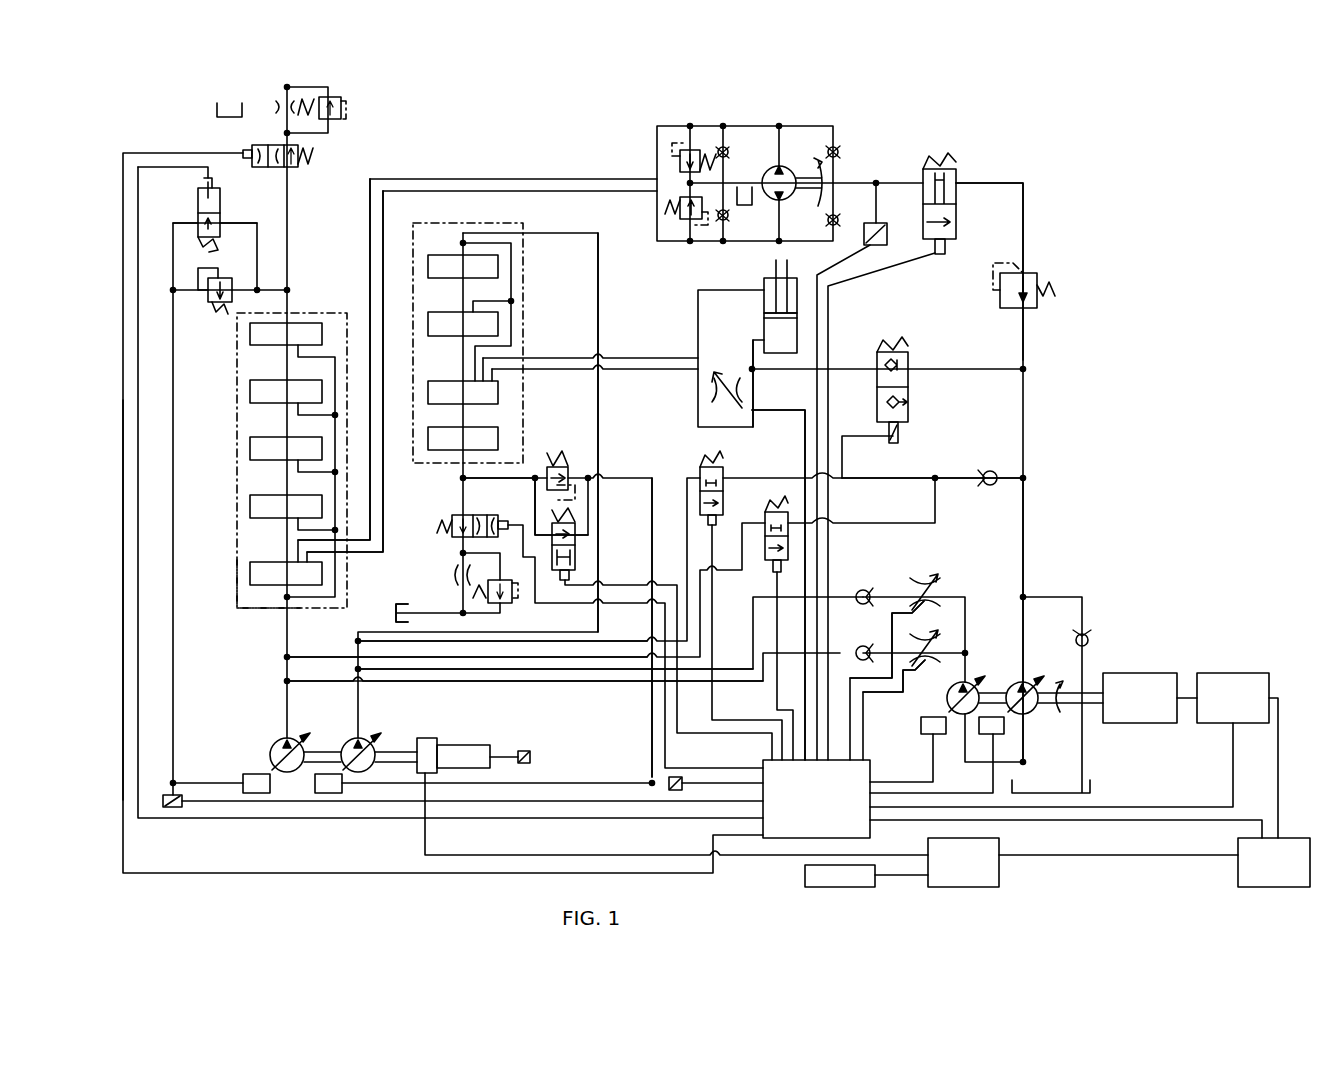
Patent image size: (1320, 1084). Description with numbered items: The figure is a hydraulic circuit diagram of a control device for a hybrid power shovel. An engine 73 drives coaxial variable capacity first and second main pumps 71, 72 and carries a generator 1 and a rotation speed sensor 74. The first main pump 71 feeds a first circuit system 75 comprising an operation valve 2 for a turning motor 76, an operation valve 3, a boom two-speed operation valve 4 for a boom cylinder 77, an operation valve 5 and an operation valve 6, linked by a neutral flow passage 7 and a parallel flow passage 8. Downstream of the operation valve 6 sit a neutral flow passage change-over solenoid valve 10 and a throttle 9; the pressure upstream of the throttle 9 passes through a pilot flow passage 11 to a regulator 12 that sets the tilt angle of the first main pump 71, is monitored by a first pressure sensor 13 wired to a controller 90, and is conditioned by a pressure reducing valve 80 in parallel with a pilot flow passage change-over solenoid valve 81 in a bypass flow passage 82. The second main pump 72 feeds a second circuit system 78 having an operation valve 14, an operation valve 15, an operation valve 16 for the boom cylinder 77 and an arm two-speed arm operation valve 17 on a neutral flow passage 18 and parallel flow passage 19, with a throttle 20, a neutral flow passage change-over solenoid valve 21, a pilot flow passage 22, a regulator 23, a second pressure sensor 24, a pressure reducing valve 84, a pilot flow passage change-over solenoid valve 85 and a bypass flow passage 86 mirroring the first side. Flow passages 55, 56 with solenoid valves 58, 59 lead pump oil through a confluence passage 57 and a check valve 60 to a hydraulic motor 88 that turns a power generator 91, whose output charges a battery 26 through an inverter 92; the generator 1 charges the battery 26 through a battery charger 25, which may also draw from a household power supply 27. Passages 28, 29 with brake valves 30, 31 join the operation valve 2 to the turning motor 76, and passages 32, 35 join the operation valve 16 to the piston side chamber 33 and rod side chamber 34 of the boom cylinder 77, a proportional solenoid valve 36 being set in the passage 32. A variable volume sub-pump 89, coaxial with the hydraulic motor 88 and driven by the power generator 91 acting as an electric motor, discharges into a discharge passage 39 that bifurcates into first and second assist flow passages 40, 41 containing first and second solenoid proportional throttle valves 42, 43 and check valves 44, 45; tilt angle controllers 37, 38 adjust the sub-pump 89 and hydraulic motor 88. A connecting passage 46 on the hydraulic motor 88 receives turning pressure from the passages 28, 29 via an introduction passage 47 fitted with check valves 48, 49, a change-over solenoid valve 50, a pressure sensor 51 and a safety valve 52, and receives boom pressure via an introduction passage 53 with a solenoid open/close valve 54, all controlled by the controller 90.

The generator 1 is at (427, 738).
The operation valve 2 is at (250, 574).
The operation valve 3 is at (250, 507).
The boom two-speed operation valve 4 is at (250, 449).
The operation valve 5 is at (250, 392).
The operation valve 6 is at (250, 334).
The neutral flow passage 7 is at (290, 420).
The parallel flow passage 8 is at (335, 360).
The throttle 9 is at (274, 112).
The neutral flow passage change-over solenoid valve 10 is at (300, 168).
The pilot flow passage 11 is at (123, 617).
The regulator 12 is at (252, 793).
The first pressure sensor 13 is at (173, 807).
The operation valve 14 is at (428, 262).
The operation valve 15 is at (428, 320).
The operation valve 16 is at (428, 388).
The arm two-speed arm operation valve 17 is at (498, 432).
The neutral flow passage 18 is at (465, 412).
The parallel flow passage 19 is at (510, 262).
The throttle 20 is at (448, 578).
The neutral flow passage change-over solenoid valve 21 is at (445, 512).
The pilot flow passage 22 is at (652, 632).
The regulator 23 is at (325, 793).
The second pressure sensor 24 is at (676, 790).
The battery charger 25 is at (999, 875).
The battery 26 is at (1238, 876).
The household power supply 27 is at (805, 878).
The passage 28 is at (748, 126).
The passage 29 is at (725, 241).
The brake valve 30 is at (680, 164).
The brake valve 31 is at (680, 215).
The passage 32 is at (697, 388).
The piston side chamber 33 is at (764, 335).
The rod side chamber 34 is at (764, 300).
The passage 35 is at (700, 325).
The proportional solenoid valve 36 is at (745, 395).
The tilt angle controller 37 is at (921, 726).
The tilt angle controller 38 is at (993, 745).
The discharge passage 39 is at (965, 618).
The first assist flow passage 40 is at (612, 683).
The second assist flow passage 41 is at (568, 672).
The first solenoid proportional throttle valve 42 is at (938, 630).
The second solenoid proportional throttle valve 43 is at (938, 574).
The check valve 44 is at (868, 645).
The check valve 45 is at (860, 588).
The connecting passage 46 is at (1023, 498).
The introduction passage 47 is at (1023, 215).
The check valve 48 is at (840, 148).
The check valve 49 is at (840, 222).
The change-over solenoid valve 50 is at (956, 162).
The pressure sensor 51 is at (887, 240).
The safety valve 52 is at (1037, 305).
The introduction passage 53 is at (948, 369).
The solenoid open/close valve 54 is at (908, 400).
The flow passage 55 is at (525, 660).
The flow passage 56 is at (485, 648).
The confluence passage 57 is at (950, 478).
The solenoid valve 58 is at (760, 512).
The solenoid valve 59 is at (688, 455).
The check valve 60 is at (993, 487).
The first main pump 71 is at (292, 775).
The second main pump 72 is at (368, 775).
The engine 73 is at (455, 745).
The rotation speed sensor 74 is at (530, 757).
The first circuit system 75 is at (240, 612).
The turning motor 76 is at (770, 200).
The boom cylinder 77 is at (797, 330).
The second circuit system 78 is at (470, 223).
The pressure reducing valve 80 is at (208, 300).
The pilot flow passage change-over solenoid valve 81 is at (200, 187).
The bypass flow passage 82 is at (240, 215).
The pressure reducing valve 84 is at (566, 466).
The pilot flow passage change-over solenoid valve 85 is at (575, 533).
The bypass flow passage 86 is at (535, 500).
The hydraulic motor 88 is at (1035, 708).
The sub-pump 89 is at (972, 680).
The controller 90 is at (816, 799).
The power generator 91 is at (1140, 698).
The inverter 92 is at (1233, 698).